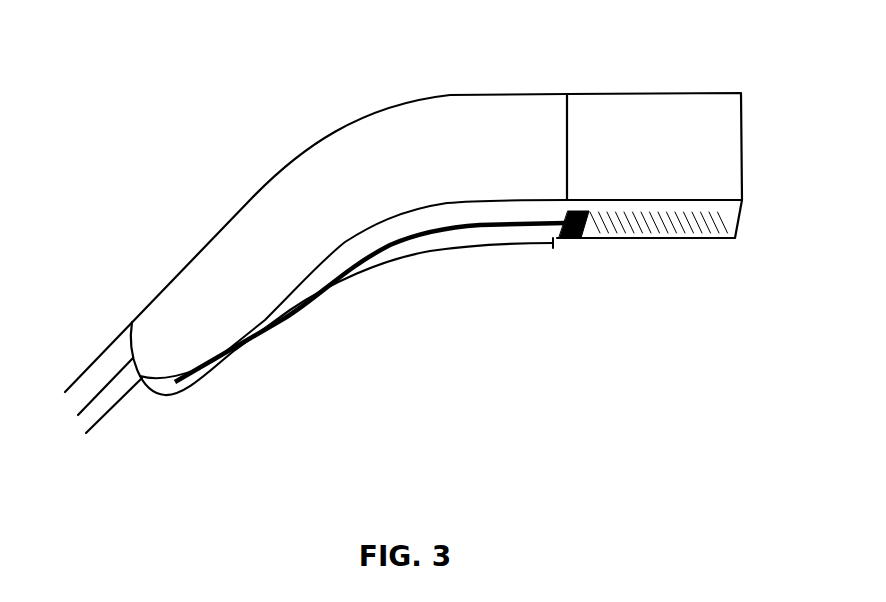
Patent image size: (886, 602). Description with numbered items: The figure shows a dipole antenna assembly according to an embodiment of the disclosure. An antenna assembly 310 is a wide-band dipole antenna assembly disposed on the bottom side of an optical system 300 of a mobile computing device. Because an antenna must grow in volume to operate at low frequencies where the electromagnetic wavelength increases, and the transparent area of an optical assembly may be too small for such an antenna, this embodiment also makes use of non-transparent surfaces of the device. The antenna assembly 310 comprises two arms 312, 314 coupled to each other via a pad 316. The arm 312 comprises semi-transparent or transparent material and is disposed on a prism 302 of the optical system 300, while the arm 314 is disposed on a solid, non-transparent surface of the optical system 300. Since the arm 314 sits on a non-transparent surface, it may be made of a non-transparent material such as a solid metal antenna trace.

The optical system 300 is at (275, 228).
The prism 302 is at (645, 117).
The antenna assembly 310 is at (276, 327).
The arm 312 is at (678, 220).
The arm 314 is at (472, 228).
The pad 316 is at (566, 205).